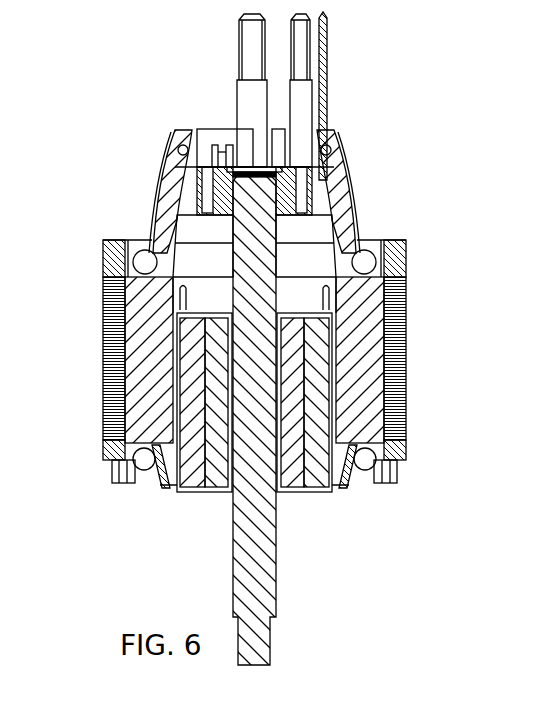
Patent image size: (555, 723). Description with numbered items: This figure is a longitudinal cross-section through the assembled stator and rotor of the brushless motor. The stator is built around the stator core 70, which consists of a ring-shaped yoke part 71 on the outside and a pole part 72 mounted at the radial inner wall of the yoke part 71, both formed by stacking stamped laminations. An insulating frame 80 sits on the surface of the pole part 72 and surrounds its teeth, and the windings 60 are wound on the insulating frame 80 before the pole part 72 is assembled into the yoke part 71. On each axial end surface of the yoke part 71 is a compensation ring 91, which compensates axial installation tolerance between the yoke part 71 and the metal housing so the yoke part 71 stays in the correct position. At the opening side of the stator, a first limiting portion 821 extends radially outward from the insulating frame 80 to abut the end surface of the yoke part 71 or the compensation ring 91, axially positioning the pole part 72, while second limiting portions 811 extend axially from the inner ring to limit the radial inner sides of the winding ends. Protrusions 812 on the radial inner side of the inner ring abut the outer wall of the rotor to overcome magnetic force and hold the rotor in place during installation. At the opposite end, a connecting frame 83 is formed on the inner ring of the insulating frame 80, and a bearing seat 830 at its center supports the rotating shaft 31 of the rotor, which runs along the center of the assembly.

The rotating shaft 31 is at (257, 545).
The windings 60 is at (354, 248).
The stator core 70 is at (316, 360).
The yoke part 71 is at (405, 352).
The pole part 72 is at (405, 318).
The insulating frame 80 is at (152, 250).
The connecting frame 83 is at (322, 192).
The bearing seat 830 is at (298, 172).
The compensation ring 91 is at (407, 252).
The second limiting portion 811 is at (132, 476).
The protrusion 812 is at (163, 484).
The first limiting portion 821 is at (118, 472).